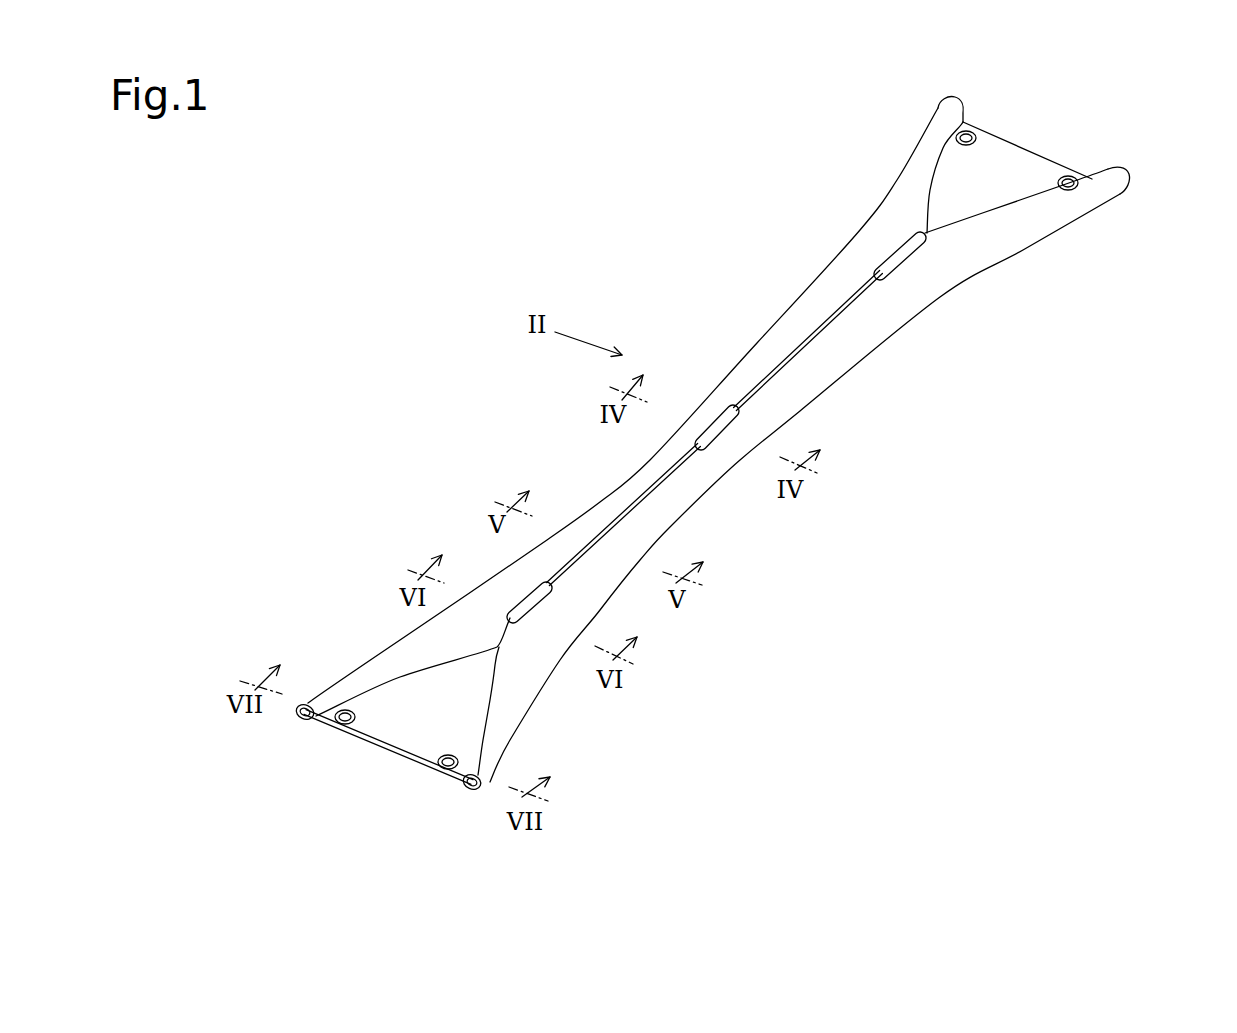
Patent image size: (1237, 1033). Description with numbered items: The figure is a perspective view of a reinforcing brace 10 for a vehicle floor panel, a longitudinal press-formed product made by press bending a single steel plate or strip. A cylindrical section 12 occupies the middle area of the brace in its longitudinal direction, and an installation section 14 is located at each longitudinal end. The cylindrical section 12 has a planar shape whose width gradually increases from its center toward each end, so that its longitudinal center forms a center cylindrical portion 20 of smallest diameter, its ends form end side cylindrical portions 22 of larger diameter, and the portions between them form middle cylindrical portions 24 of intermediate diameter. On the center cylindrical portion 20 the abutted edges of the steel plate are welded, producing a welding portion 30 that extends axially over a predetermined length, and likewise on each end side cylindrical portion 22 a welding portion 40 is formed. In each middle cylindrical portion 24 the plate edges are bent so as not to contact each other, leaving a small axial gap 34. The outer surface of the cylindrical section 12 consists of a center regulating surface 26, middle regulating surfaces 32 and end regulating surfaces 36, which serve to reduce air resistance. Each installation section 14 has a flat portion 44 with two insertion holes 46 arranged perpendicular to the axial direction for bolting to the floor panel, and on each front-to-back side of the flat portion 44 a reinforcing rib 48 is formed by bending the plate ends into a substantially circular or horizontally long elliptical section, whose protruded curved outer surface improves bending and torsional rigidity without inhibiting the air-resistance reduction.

The reinforcing brace 10 is at (728, 315).
The cylindrical section 12 is at (1060, 482).
The installation section 14 is at (134, 757).
The center cylindrical portion 20 is at (768, 443).
The end side cylindrical portion 22 is at (938, 304).
The middle cylindrical portion 24 is at (843, 384).
The center regulating surface 26 is at (720, 408).
The welding portion 30 is at (713, 437).
The middle regulating surface 32 is at (828, 300).
The gap 34 is at (800, 354).
The end regulating surface 36 is at (927, 276).
The welding portion 40 is at (900, 252).
The flat portion 44 is at (378, 755).
The insertion hole 46 is at (350, 712).
The reinforcing rib 48 is at (288, 705).